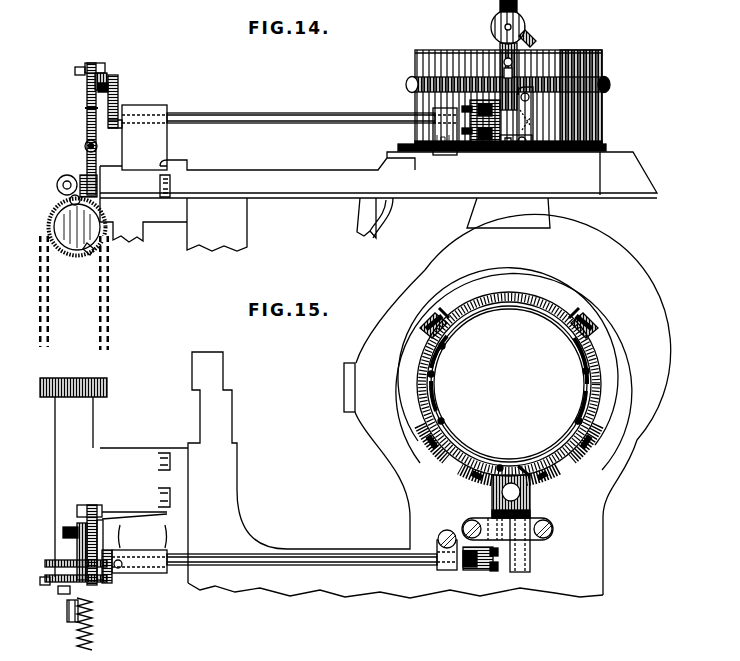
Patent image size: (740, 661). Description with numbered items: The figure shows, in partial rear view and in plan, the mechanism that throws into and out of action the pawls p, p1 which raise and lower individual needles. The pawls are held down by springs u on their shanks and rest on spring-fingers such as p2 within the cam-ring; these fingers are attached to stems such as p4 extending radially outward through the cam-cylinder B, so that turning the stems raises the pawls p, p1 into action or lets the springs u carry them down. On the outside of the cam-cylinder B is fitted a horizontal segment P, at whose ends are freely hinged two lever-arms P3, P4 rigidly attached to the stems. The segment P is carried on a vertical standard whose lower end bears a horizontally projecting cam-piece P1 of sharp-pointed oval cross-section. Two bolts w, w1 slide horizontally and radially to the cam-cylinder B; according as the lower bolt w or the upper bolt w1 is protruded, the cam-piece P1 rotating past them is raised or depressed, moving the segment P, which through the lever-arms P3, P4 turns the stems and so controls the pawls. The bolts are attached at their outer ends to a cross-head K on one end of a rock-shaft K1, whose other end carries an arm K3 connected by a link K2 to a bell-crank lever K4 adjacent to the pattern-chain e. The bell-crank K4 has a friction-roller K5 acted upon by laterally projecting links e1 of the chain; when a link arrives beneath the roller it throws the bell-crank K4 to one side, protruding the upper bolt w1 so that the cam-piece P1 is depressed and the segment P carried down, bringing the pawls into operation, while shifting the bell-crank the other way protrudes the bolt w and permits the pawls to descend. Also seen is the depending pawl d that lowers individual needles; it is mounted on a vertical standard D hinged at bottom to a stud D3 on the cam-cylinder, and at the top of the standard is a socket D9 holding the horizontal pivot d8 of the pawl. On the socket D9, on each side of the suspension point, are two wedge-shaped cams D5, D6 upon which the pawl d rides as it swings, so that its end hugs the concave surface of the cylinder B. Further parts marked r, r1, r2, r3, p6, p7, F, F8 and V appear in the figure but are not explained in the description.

In FIG. 14, the cam-cylinder B is at (604, 120).
In FIG. 15, the cam-cylinder B is at (504, 296).
In FIG. 14, the horizontal segment P is at (470, 80).
In FIG. 15, the horizontal segment P is at (471, 483).
In FIG. 14, the cam-piece P1 is at (534, 117).
In FIG. 15, the cam-piece P1 is at (492, 492).
In FIG. 14, the lever-arm P3 is at (410, 90).
In FIG. 15, the lever-arm P3 is at (420, 448).
In FIG. 14, the lever-arm P4 is at (607, 86).
In FIG. 15, the pawl p is at (448, 348).
In FIG. 15, the pawl p1 is at (581, 372).
In FIG. 15, the spring-finger p2 is at (435, 400).
In FIG. 15, the stem p4 is at (446, 424).
In FIG. 15, the contact point p6 is at (575, 423).
In FIG. 15, the outer ring segment p7 is at (586, 448).
In FIG. 15, the commutator ring contact r is at (436, 374).
In FIG. 15, the commutator ring segment r1 is at (446, 342).
In FIG. 15, the commutator ring segment r2 is at (582, 386).
In FIG. 15, the commutator ring segment r3 is at (581, 401).
In FIG. 15, the spring u is at (591, 342).
In FIG. 14, the bolt w is at (466, 135).
In FIG. 15, the bolt w is at (428, 342).
In FIG. 14, the upper bolt w1 is at (468, 103).
In FIG. 15, the upper bolt w1 is at (501, 550).
In FIG. 14, the vertical standard D is at (499, 50).
In FIG. 14, the stud D3 is at (510, 147).
In FIG. 14, the wedge-shaped cam D5 is at (515, 66).
In FIG. 14, the wedge-shaped cam D6 is at (500, 66).
In FIG. 15, the socket D9 is at (531, 490).
In FIG. 14, the depending pawl d is at (533, 40).
In FIG. 15, the depending pawl d is at (520, 466).
In FIG. 15, the horizontal pivot d8 is at (496, 462).
In FIG. 14, the spring F is at (531, 80).
In FIG. 14, the spring / screw F8 is at (85, 148).
In FIG. 15, the spring / screw F8 is at (76, 638).
In FIG. 14, the cross-head K is at (484, 144).
In FIG. 15, the cross-head K is at (477, 571).
In FIG. 14, the rock-shaft K1 is at (313, 120).
In FIG. 15, the rock-shaft K1 is at (358, 554).
In FIG. 14, the link K2 is at (106, 64).
In FIG. 15, the link K2 is at (100, 508).
In FIG. 14, the arm K3 is at (120, 84).
In FIG. 15, the arm K3 is at (112, 588).
In FIG. 14, the bell-crank lever K4 is at (87, 110).
In FIG. 15, the bell-crank lever K4 is at (76, 520).
In FIG. 14, the friction-roller K5 is at (58, 188).
In FIG. 14, the pulley V is at (78, 252).
In FIG. 15, the pulley V is at (60, 604).
In FIG. 14, the pattern-chain e is at (38, 306).
In FIG. 15, the pattern-chain e is at (42, 586).
In FIG. 15, the laterally-projecting link e1 is at (44, 565).